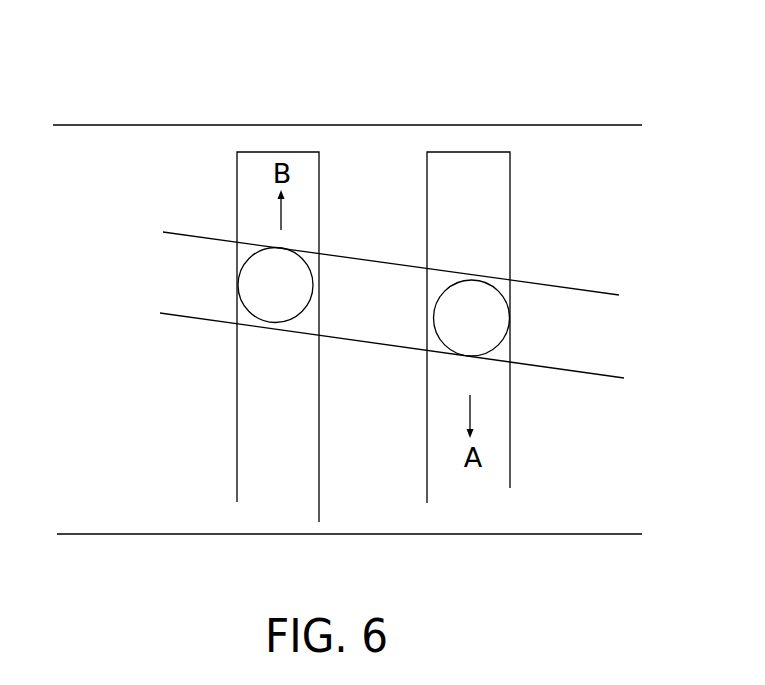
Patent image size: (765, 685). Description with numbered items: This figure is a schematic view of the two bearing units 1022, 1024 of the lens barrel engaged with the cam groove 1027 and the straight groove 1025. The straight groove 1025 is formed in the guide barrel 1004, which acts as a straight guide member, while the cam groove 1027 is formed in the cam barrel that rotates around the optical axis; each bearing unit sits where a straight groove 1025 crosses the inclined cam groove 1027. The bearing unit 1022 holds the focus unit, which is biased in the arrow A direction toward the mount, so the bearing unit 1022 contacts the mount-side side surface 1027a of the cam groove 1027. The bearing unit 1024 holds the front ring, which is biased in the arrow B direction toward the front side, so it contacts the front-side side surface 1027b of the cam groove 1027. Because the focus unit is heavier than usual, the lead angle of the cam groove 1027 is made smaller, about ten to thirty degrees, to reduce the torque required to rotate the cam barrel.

The guide barrel 1004 is at (203, 203).
The straight groove 1025 is at (318, 193).
The bearing unit 1022 is at (484, 319).
The bearing unit 1024 is at (273, 288).
The cam groove 1027 is at (340, 420).
The mount-side side surface 1027a is at (435, 355).
The front-side side surface 1027b is at (207, 239).